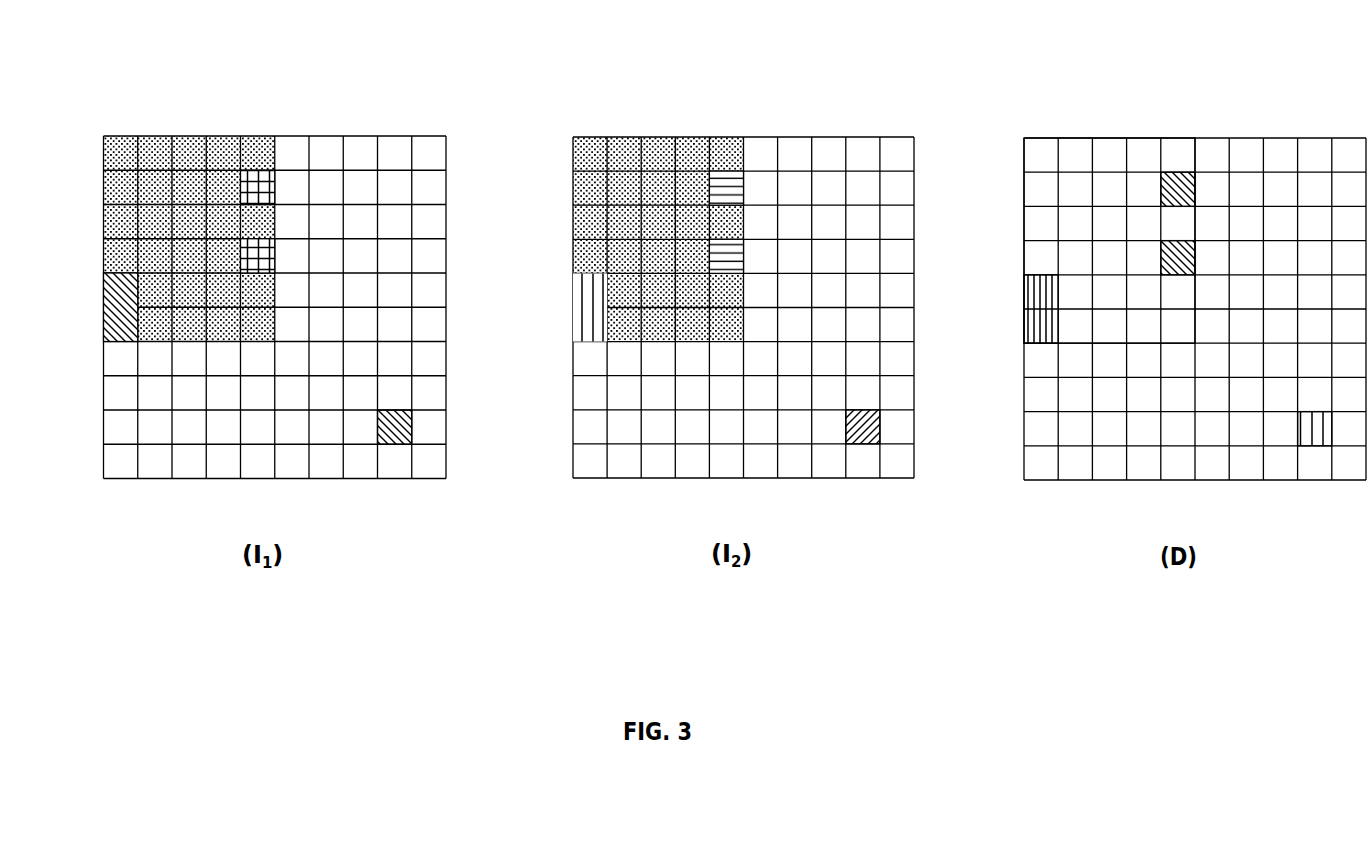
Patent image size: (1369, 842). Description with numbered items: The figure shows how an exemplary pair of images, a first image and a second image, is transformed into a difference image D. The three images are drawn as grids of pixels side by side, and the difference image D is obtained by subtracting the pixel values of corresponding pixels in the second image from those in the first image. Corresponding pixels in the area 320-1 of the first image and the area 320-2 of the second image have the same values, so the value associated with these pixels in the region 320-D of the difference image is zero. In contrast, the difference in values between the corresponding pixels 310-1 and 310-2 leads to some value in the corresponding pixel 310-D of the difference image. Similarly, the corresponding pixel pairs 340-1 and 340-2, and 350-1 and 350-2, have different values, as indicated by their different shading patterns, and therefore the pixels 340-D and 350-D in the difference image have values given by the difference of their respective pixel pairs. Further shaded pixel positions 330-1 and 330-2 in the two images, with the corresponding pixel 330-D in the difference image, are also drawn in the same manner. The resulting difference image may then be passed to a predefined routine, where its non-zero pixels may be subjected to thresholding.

The pixel 310-1 is at (123, 290).
The area 320-1 is at (156, 188).
The first block of first image I1 330-1 is at (257, 193).
The pixel 340-1 is at (398, 430).
The pixel 350-1 is at (257, 256).
The pixel 310-2 is at (592, 292).
The area 320-2 is at (593, 257).
The first block of second image I2 330-2 is at (727, 194).
The pixel 340-2 is at (862, 428).
The pixel 350-2 is at (727, 257).
The pixel 310-D is at (1042, 291).
The region 320-D is at (1076, 192).
The first block of difference image D 330-D is at (1177, 195).
The pixel 340-D is at (1315, 428).
The pixel 350-D is at (1185, 258).